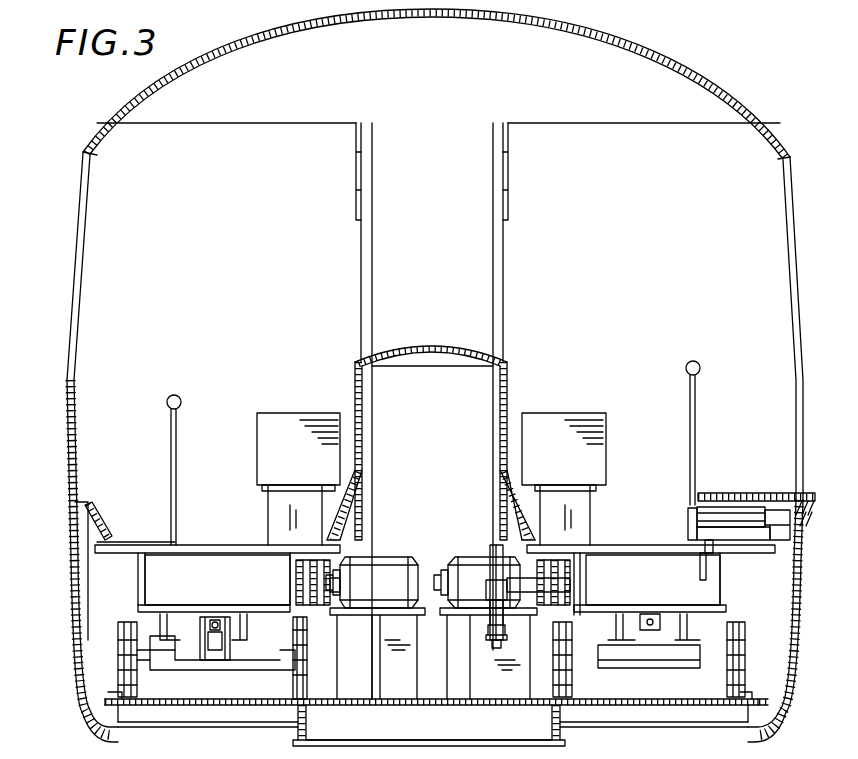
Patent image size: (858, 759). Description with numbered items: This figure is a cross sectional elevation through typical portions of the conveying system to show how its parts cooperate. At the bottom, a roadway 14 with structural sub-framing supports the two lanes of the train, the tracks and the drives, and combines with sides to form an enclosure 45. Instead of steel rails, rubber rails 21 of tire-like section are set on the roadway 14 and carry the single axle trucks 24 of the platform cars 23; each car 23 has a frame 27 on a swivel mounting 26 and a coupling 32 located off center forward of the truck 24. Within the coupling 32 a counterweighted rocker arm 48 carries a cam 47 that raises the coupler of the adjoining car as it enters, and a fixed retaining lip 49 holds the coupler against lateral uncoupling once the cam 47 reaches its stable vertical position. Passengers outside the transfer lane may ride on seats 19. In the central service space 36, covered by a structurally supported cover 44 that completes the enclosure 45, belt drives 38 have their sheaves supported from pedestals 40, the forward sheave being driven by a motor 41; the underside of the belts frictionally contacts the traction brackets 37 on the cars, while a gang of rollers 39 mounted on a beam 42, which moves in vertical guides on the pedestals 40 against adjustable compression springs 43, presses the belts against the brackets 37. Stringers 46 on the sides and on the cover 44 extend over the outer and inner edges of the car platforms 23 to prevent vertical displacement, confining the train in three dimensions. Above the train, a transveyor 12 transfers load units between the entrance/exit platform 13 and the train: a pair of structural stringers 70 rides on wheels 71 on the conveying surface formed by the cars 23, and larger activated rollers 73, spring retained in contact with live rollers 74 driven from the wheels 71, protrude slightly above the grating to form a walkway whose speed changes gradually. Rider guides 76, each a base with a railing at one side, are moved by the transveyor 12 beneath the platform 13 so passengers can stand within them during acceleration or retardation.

The transveyor 12 is at (690, 520).
The entrance/exit platform 13 is at (770, 493).
The roadway 14 is at (648, 686).
The seat 19 is at (268, 413).
The rubber rail 21 is at (310, 697).
The platform car 23 is at (232, 530).
The axle truck 24 is at (738, 622).
The swivel mounting 26 is at (250, 624).
The frame 27 is at (138, 576).
The coupling 32 is at (197, 655).
The service space 36 is at (436, 422).
The traction member 37 is at (318, 616).
The belt drive 38 is at (574, 570).
The roller 39 is at (574, 588).
The pedestal 40 is at (417, 630).
The motor 41 is at (405, 556).
The beam 42 is at (517, 612).
The compression spring 43 is at (490, 637).
The cover 44 is at (428, 348).
The enclosure 45 is at (76, 642).
The stringer 46 is at (95, 522).
The cam 47 is at (250, 650).
The rocker arm 48 is at (213, 650).
The retaining lip 49 is at (225, 618).
The structural stringer 70 is at (690, 535).
The wheel 71 is at (706, 553).
The activated roller 73 is at (716, 512).
The live roller 74 is at (690, 508).
The rider guide 76 is at (148, 545).